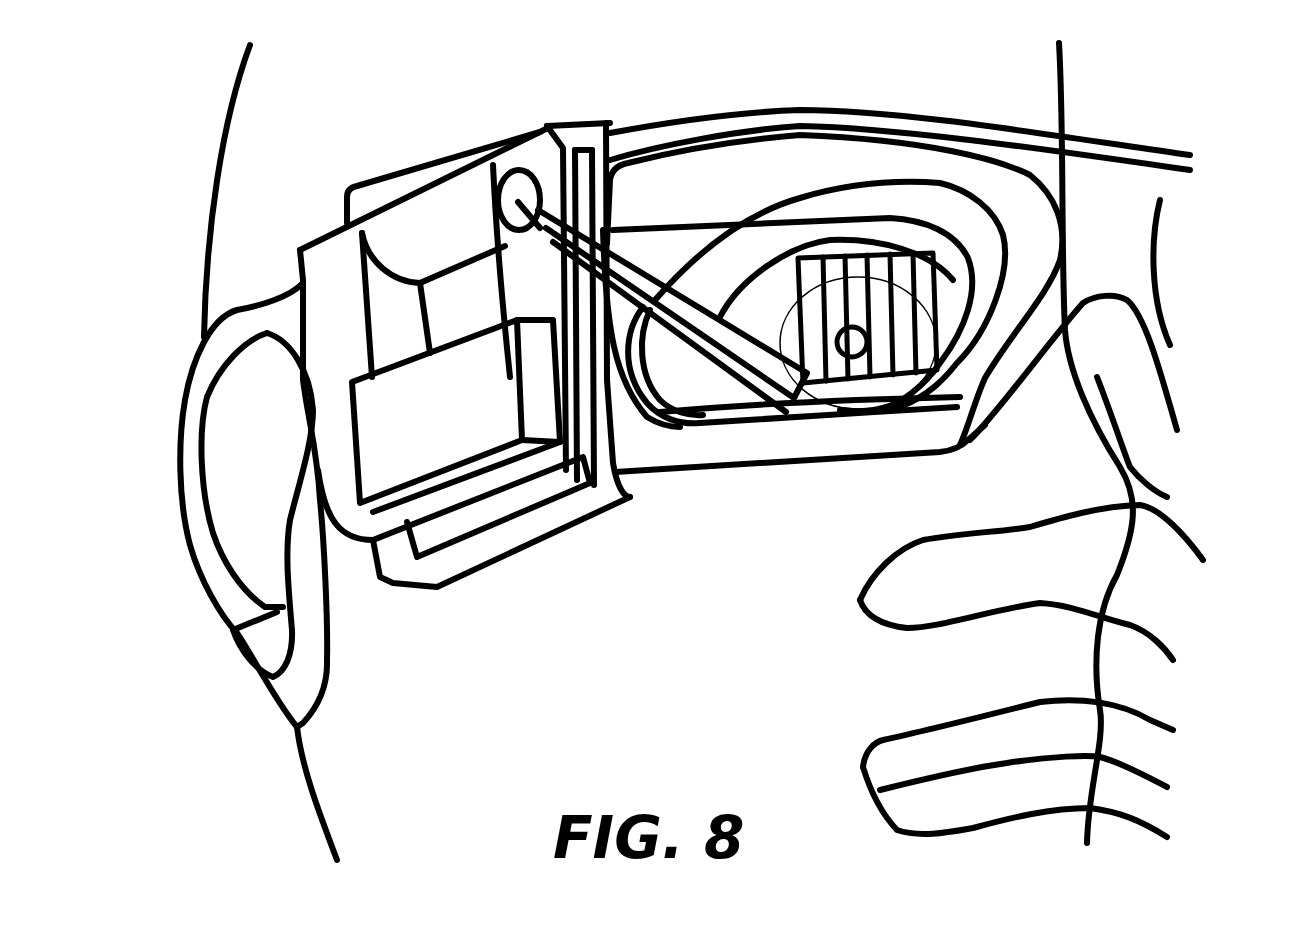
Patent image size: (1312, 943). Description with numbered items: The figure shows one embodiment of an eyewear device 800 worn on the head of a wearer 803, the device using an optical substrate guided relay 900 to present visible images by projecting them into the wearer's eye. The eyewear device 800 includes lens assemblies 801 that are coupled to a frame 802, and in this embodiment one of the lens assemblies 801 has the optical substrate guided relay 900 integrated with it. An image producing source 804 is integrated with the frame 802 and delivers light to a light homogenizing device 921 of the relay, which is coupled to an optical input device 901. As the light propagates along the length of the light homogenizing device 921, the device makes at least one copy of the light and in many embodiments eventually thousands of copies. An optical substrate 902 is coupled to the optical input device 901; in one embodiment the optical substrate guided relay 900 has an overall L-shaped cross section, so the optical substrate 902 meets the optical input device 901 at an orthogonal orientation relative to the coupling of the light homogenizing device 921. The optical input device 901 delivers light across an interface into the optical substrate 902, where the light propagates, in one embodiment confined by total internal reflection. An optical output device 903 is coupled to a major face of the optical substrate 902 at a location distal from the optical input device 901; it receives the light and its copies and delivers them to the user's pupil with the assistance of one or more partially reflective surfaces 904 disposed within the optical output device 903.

The eyewear device 800 is at (1130, 200).
The lens assemblies 801 is at (928, 163).
The frame 802 is at (840, 103).
The wearer 803 is at (233, 280).
The image producing source 804 is at (447, 240).
The optical substrate guided relay 900 is at (977, 273).
The optical input device 901 is at (690, 307).
The optical substrate 902 is at (750, 257).
The optical output device 903 is at (830, 257).
The partially reflective surfaces 904 is at (950, 308).
The light homogenizing device 921 is at (767, 395).